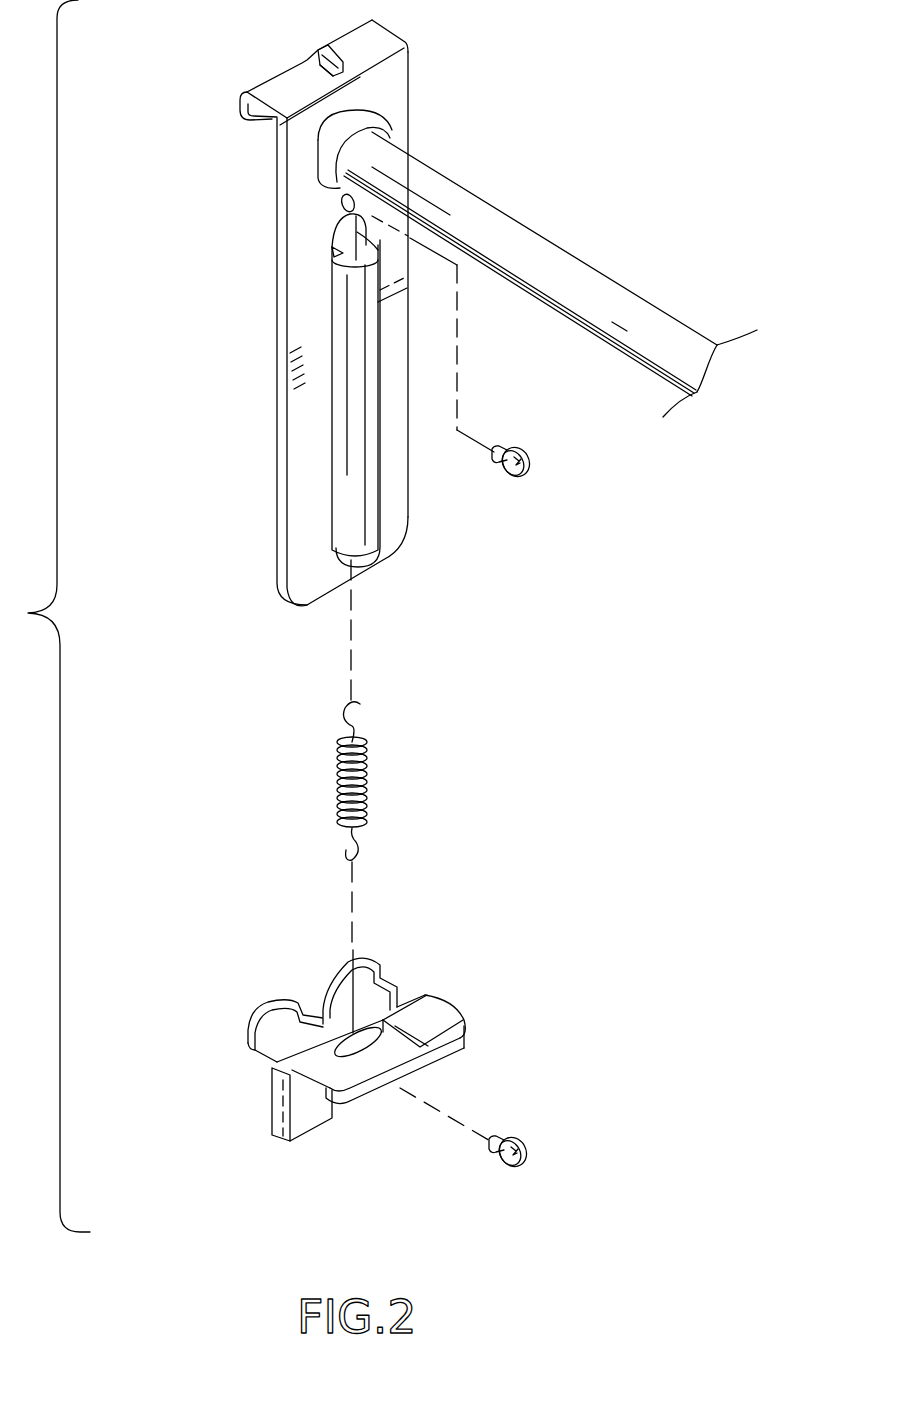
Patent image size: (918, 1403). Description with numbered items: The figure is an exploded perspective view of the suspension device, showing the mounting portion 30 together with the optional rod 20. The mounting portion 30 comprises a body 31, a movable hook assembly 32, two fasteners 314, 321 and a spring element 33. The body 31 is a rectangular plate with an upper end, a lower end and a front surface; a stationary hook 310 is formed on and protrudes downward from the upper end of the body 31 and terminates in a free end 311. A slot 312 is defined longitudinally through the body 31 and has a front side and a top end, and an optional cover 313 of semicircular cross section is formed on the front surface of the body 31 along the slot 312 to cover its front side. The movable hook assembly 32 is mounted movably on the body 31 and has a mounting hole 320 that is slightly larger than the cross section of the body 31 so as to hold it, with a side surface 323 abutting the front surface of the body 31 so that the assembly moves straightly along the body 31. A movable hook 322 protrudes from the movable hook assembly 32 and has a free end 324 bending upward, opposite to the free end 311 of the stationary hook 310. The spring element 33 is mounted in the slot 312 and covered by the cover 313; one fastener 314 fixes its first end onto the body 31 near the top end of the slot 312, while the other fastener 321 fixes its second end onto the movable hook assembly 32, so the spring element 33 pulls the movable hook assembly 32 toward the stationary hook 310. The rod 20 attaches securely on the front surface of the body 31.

The rod 20 is at (592, 275).
The mounting portion 30 is at (452, 46).
The body 31 is at (332, 318).
The stationary hook 310 is at (275, 86).
The free end 311 is at (243, 110).
The slot 312 is at (336, 255).
The cover 313 is at (347, 450).
The fastener 314 is at (517, 475).
The movable hook assembly 32 is at (464, 980).
The mounting hole 320 is at (345, 1050).
The fastener 321 is at (502, 1167).
The movable hook 322 is at (282, 1047).
The side surface 323 is at (397, 990).
The free end 324 is at (273, 1012).
The spring element 33 is at (365, 780).